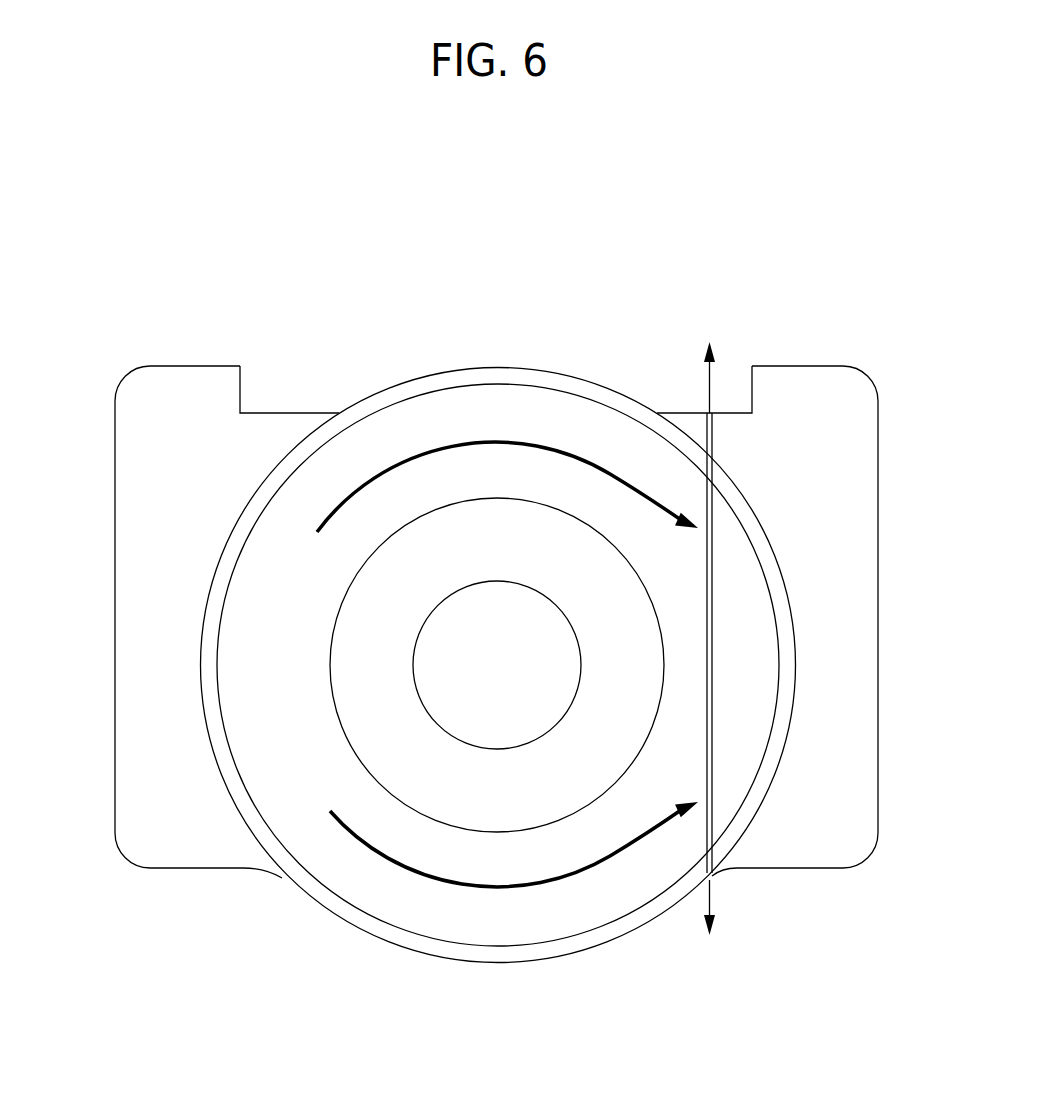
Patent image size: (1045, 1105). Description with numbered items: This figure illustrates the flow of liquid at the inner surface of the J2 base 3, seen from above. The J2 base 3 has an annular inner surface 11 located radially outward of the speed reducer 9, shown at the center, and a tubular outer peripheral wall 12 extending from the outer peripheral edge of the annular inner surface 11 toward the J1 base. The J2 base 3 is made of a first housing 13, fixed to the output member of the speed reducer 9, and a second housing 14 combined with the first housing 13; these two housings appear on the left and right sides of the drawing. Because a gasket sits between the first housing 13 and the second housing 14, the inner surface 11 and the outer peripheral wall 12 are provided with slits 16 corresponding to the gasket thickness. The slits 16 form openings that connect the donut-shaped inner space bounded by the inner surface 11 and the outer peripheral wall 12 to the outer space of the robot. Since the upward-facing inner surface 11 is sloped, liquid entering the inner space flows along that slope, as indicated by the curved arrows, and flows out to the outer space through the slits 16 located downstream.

The J2 base 3 is at (493, 559).
The speed reducer 9 is at (330, 652).
The annular inner surface 11 is at (490, 410).
The tubular outer peripheral wall 12 is at (201, 622).
The first housing 13 is at (115, 456).
The second housing 14 is at (878, 442).
The slit 16 is at (712, 435).